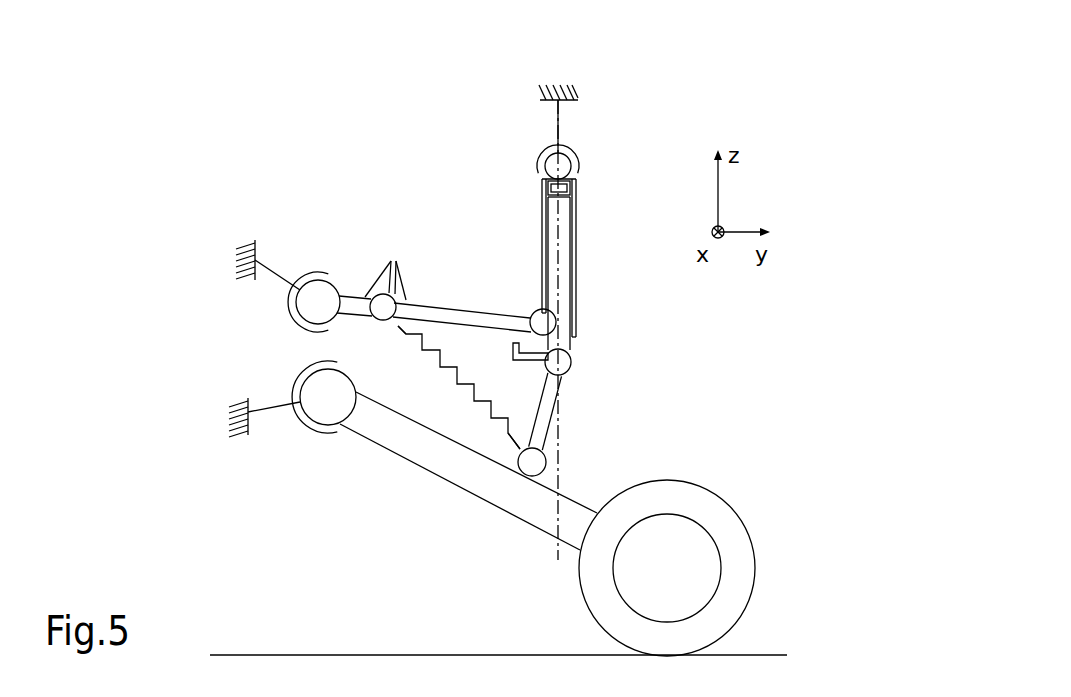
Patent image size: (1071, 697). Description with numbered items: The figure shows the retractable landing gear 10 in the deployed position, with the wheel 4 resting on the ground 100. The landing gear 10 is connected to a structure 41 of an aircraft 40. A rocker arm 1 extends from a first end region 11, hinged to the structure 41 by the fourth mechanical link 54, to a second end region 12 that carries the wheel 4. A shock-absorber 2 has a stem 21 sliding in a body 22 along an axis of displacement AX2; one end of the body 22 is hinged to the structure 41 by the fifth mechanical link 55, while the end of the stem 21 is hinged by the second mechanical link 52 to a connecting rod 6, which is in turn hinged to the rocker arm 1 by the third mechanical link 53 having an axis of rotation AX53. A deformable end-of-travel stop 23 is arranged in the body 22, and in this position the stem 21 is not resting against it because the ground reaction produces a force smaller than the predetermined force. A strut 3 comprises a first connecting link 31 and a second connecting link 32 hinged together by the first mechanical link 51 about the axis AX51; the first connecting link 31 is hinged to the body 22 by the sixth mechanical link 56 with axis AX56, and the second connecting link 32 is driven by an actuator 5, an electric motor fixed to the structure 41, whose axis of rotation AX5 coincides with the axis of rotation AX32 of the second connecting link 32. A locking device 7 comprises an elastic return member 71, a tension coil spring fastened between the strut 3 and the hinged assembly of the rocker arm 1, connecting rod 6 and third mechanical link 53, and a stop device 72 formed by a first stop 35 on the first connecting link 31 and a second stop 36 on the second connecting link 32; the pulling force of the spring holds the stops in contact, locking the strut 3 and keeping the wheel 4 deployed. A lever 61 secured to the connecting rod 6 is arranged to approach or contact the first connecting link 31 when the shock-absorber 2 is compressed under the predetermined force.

The retractable landing gear 10 is at (719, 90).
The ground 100 is at (768, 655).
The rocker arm 1 is at (422, 459).
The first end region 11 is at (344, 440).
The second end region 12 is at (548, 584).
The shock-absorber 2 is at (613, 319).
The stem 21 is at (563, 270).
The body 22 is at (577, 223).
The end-of-travel stop 23 is at (574, 187).
The strut 3 is at (362, 254).
The first connecting link 31 is at (463, 305).
The second connecting link 32 is at (357, 297).
The first stop 35 is at (397, 270).
The second stop 36 is at (390, 268).
The wheel 4 is at (692, 547).
The aircraft 40 is at (412, 243).
The structure 41 is at (578, 150).
The actuator 5 is at (330, 282).
The first mechanical link 51 is at (383, 318).
The second mechanical link 52 is at (563, 361).
The third mechanical link 53 is at (533, 462).
The fourth mechanical link 54 is at (320, 403).
The fifth mechanical link 55 is at (553, 160).
The sixth mechanical link 56 is at (535, 316).
The connecting rod 6 is at (546, 412).
The lever 61 is at (518, 373).
The locking device 7 is at (464, 372).
The elastic return member 71 is at (506, 433).
The stop device 72 is at (423, 284).
The axis of displacement AX2 is at (565, 212).
The axis of rotation of the actuator AX5 is at (255, 221).
The axis of rotation of the second connecting link AX32 is at (318, 300).
The axis of rotation of the first mechanical link AX51 is at (383, 308).
The axis of rotation of the third mechanical link AX53 is at (528, 465).
The axis of rotation of the sixth mechanical link AX56 is at (546, 323).